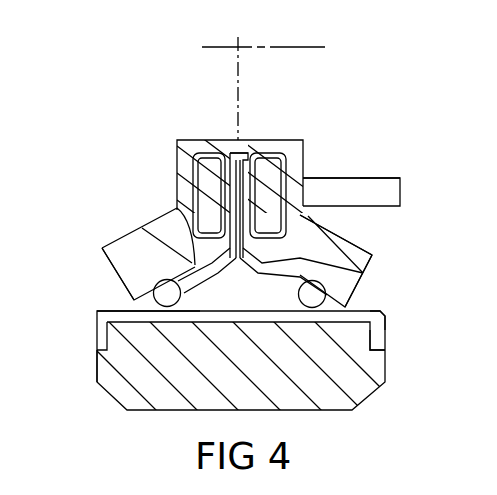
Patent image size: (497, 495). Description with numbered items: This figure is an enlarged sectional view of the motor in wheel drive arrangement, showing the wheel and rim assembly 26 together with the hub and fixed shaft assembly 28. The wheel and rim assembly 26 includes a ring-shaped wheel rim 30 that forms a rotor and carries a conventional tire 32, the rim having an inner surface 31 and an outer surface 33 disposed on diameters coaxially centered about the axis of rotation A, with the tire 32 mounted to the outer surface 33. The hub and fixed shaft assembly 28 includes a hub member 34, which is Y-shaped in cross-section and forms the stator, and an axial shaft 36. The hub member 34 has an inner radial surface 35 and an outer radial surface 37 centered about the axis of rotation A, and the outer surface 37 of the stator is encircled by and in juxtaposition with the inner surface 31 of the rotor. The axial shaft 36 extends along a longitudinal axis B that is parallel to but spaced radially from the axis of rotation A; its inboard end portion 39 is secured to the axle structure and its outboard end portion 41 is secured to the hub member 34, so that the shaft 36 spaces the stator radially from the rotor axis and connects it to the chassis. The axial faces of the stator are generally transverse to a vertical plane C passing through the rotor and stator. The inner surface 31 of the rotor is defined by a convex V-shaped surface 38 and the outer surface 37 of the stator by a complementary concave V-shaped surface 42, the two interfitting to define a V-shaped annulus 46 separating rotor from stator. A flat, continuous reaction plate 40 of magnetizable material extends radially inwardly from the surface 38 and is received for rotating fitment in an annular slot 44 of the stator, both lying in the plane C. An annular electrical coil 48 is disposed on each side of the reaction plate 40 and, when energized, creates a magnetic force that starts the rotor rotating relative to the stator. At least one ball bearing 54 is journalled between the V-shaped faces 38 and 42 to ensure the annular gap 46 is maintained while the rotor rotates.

The axis of rotation A is at (303, 46).
The longitudinal axis B is at (355, 178).
The vertical plane C is at (236, 56).
The wheel and rim assembly 26 is at (384, 346).
The hub and fixed shaft assembly 28 is at (372, 255).
The wheel rim 30 is at (385, 312).
The inner surface 31 is at (103, 312).
The tire 32 is at (370, 395).
The outer surface 33 is at (100, 362).
The hub member 34 is at (350, 235).
The inner radial surface 35 is at (185, 140).
The axial shaft 36 is at (372, 178).
The outer radial surface 37 is at (140, 236).
The convex V-shaped surface 38 is at (363, 273).
The inboard end portion 39 is at (400, 180).
The reaction plate 40 is at (230, 150).
The outboard end portion 41 is at (315, 185).
The concave V-shaped surface 42 is at (177, 208).
The annular slot 44 is at (236, 185).
The V-shaped annulus 46 is at (320, 225).
The electrical coil 48 is at (195, 160).
The ball bearing 54 is at (112, 267).